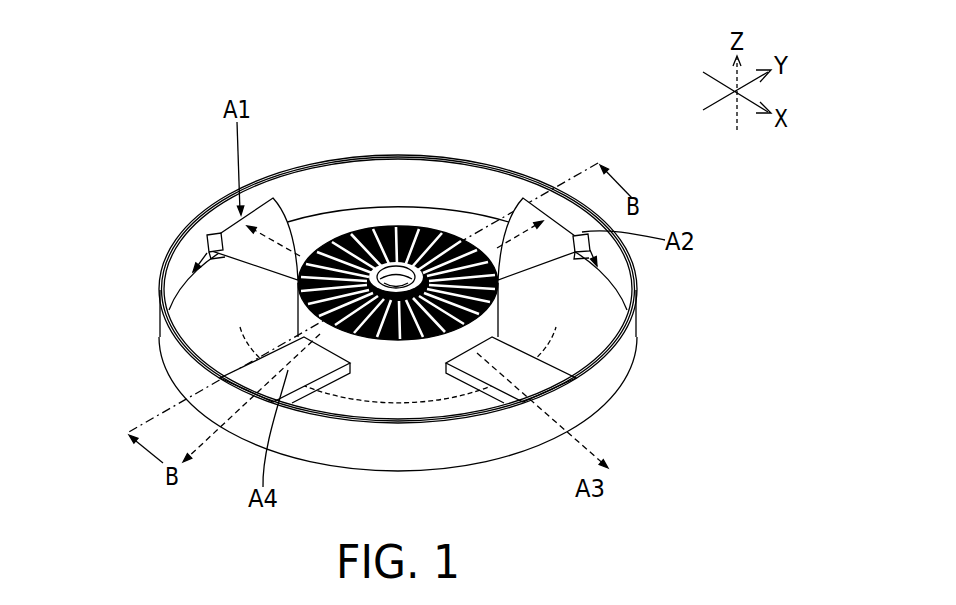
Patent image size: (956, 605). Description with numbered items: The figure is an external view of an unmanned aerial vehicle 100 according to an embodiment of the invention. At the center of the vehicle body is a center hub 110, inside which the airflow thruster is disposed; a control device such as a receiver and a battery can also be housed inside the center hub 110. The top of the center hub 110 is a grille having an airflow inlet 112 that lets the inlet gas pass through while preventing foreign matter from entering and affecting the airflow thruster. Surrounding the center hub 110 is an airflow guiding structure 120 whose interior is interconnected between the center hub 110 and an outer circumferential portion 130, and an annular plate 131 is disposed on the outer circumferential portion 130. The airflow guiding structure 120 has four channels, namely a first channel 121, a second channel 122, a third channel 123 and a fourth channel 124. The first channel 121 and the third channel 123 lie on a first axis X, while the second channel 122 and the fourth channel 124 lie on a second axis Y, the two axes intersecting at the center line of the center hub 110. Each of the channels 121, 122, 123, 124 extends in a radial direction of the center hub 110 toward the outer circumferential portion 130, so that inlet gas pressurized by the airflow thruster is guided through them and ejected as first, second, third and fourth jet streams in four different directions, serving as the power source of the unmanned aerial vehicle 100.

The unmanned aerial vehicle 100 is at (122, 26).
The center hub 110 is at (430, 377).
The airflow inlet 112 is at (385, 342).
The airflow guiding structure 120 is at (505, 92).
The first channel 121 is at (258, 215).
The second channel 122 is at (480, 237).
The third channel 123 is at (520, 362).
The fourth channel 124 is at (293, 267).
The outer circumferential portion 130 is at (174, 243).
The annular plate 131 is at (384, 219).